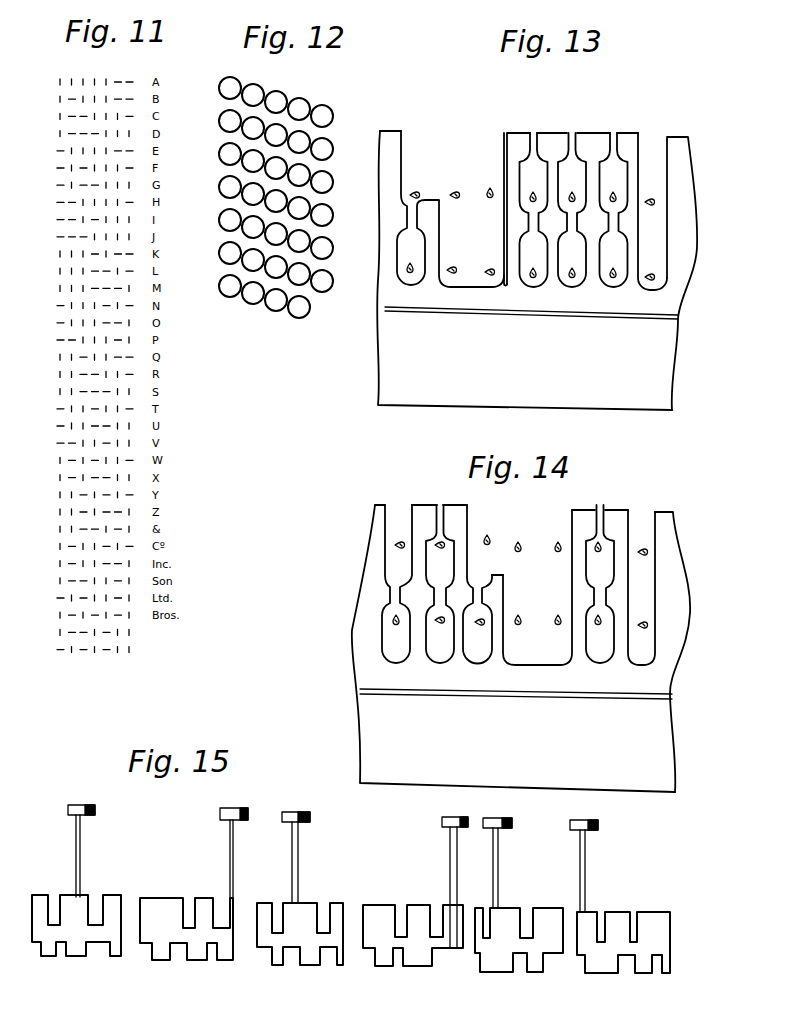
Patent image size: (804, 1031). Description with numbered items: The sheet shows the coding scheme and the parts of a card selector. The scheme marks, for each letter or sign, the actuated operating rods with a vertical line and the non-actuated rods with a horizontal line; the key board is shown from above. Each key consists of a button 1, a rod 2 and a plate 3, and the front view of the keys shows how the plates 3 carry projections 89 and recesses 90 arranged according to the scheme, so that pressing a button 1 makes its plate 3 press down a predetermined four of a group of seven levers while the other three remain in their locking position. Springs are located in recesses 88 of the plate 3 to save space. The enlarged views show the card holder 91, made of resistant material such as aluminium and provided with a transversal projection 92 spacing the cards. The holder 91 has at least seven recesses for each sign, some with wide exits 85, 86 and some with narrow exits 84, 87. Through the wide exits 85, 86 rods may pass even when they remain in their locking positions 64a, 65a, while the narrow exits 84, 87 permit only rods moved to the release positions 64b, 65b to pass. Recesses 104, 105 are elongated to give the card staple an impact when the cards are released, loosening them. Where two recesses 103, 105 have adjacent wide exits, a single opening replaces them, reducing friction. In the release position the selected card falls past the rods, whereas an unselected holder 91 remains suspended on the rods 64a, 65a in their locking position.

In FIG. 12, the key button 1 is at (284, 197).
In FIG. 15, the key button 1 is at (338, 809).
In FIG. 15, the key rod 2 is at (330, 880).
In FIG. 15, the selecting plate 3 is at (351, 916).
In FIG. 13, the selecting rod in locking position 64a is at (451, 148).
In FIG. 14, the selecting rod in locking position 64a is at (392, 531).
In FIG. 13, the selecting rod in release position 64b is at (574, 188).
In FIG. 14, the selecting rod in release position 64b is at (520, 580).
In FIG. 13, the locking rod in locking position 65a is at (416, 309).
In FIG. 14, the locking rod in locking position 65a is at (537, 619).
In FIG. 13, the locking rod in release position 65b is at (375, 296).
In FIG. 14, the locking rod in release position 65b is at (635, 624).
In FIG. 14, the narrow exit 84 is at (411, 566).
In FIG. 13, the wide exit 85 is at (537, 251).
In FIG. 14, the wide exit 85 is at (521, 631).
In FIG. 13, the wide exit 86 is at (689, 211).
In FIG. 14, the wide exit 86 is at (622, 587).
In FIG. 13, the narrow exit 87 is at (598, 167).
In FIG. 14, the narrow exit 87 is at (664, 565).
In FIG. 15, the recess of plate 88 is at (340, 887).
In FIG. 15, the projection 89 is at (343, 980).
In FIG. 15, the recess 90 is at (343, 979).
In FIG. 13, the card holder 91 is at (511, 342).
In FIG. 14, the card holder 91 is at (492, 691).
In FIG. 13, the transversal projection 92 is at (555, 308).
In FIG. 14, the transversal projection 92 is at (545, 695).
In FIG. 13, the recess 103 is at (450, 191).
In FIG. 13, the elongated recess 104 is at (674, 163).
In FIG. 14, the elongated recess 104 is at (377, 552).
In FIG. 13, the elongated recess 105 is at (677, 254).
In FIG. 14, the elongated recess 105 is at (362, 604).